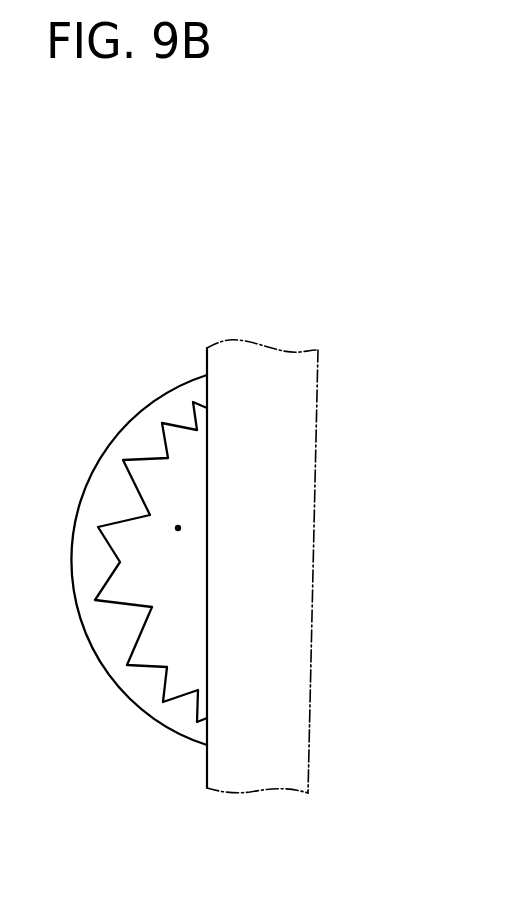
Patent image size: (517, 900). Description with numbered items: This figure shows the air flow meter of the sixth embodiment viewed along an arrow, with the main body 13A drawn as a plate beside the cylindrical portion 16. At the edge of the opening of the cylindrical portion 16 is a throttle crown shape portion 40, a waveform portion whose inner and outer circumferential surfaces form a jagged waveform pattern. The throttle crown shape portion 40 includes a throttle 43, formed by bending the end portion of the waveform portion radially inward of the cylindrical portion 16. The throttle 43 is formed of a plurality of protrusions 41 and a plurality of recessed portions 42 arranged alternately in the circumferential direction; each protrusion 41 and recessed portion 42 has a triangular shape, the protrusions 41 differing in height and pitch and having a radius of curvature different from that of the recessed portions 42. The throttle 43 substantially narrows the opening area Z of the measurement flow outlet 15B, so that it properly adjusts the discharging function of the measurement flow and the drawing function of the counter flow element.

The main body 13A is at (248, 363).
The throttle crown shape portion 40 is at (163, 392).
The throttle 43 is at (115, 398).
The recessed portion 42 is at (96, 526).
The protrusion 41 is at (135, 508).
The measurement flow outlet 15B is at (178, 528).
The cylindrical portion 16 is at (135, 704).
The opening area Z is at (178, 567).